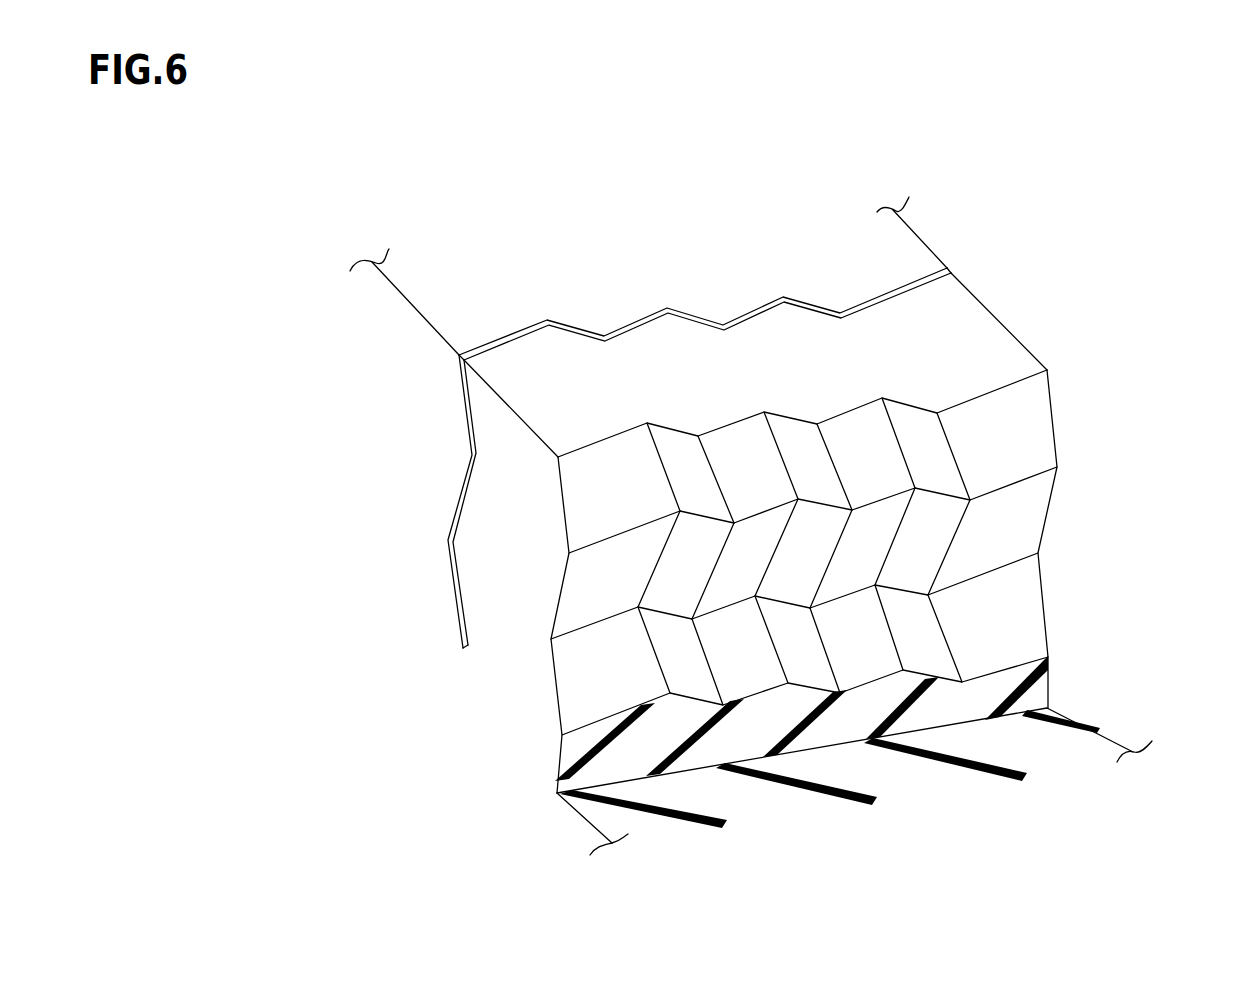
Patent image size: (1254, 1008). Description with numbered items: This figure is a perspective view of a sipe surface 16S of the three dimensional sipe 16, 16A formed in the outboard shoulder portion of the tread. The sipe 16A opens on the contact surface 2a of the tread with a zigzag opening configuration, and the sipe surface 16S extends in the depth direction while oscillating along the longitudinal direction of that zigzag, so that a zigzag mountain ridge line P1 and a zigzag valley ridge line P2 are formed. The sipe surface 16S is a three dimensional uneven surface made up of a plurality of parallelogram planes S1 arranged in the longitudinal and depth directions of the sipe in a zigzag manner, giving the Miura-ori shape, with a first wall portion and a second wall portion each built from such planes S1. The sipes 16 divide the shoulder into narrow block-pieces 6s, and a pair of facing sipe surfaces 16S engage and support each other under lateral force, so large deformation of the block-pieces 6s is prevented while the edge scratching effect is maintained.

The three dimensional sipe 16 is at (859, 468).
The contact surface 2a is at (712, 438).
The block-piece 6s is at (470, 308).
The three dimensional sipe 16A is at (467, 428).
The sipe surface 16S is at (746, 737).
The parallelogram plane S1 is at (932, 452).
The zigzag mountain ridge line P1 is at (943, 637).
The zigzag valley ridge line P2 is at (898, 647).